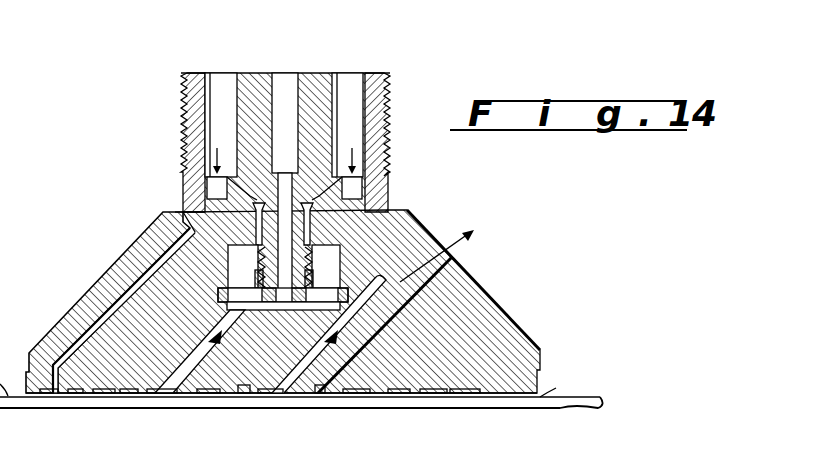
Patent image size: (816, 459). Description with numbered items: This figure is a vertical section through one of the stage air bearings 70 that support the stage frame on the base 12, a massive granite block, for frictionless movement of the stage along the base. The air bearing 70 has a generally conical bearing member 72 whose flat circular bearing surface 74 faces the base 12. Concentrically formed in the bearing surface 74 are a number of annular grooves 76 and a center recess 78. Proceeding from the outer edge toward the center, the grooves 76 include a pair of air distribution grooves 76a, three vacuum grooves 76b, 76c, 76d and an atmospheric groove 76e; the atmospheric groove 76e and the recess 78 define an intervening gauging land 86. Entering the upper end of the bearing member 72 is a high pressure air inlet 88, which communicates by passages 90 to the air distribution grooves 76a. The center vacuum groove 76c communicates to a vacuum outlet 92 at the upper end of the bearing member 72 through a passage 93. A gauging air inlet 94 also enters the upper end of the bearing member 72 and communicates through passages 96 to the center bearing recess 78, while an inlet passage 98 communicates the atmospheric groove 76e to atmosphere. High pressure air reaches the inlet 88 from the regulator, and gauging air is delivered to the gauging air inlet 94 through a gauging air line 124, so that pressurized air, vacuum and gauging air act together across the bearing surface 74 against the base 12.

The air bearing 70 is at (272, 231).
The gauging air line 124 is at (285, 73).
The high pressure air inlet 88 is at (207, 90).
The vacuum outlet 92 is at (288, 88).
The gauging air inlet 94 is at (345, 86).
The passages 90 is at (66, 330).
The passage 93 is at (200, 319).
The bearing member 72 is at (500, 313).
The passages 96 is at (410, 250).
The inlet passage 98 is at (427, 278).
The base 12 is at (600, 393).
The annular grooves 76 is at (50, 408).
The air distribution grooves 76a is at (66, 396).
The vacuum groove 76b is at (120, 396).
The center vacuum groove 76c is at (170, 396).
The vacuum groove 76d is at (220, 396).
The atmospheric groove 76e is at (315, 398).
The center recess 78 is at (285, 398).
The gauging land 86 is at (310, 396).
The bearing surface 74 is at (487, 403).